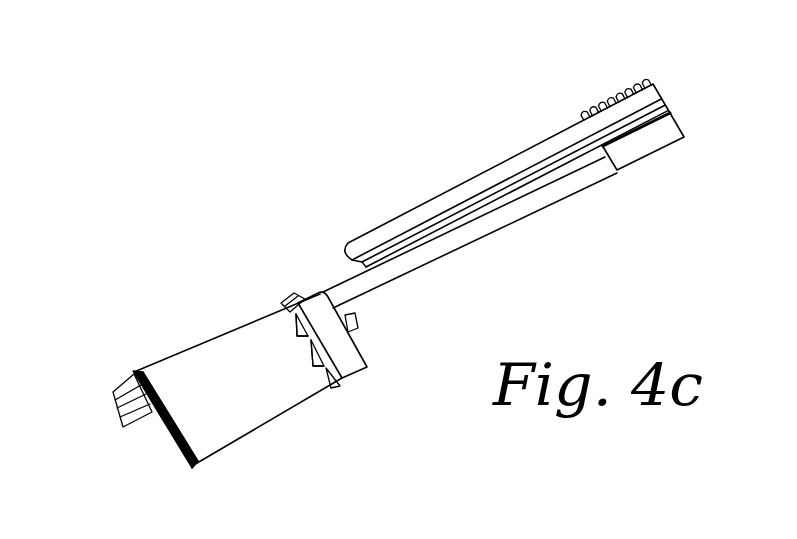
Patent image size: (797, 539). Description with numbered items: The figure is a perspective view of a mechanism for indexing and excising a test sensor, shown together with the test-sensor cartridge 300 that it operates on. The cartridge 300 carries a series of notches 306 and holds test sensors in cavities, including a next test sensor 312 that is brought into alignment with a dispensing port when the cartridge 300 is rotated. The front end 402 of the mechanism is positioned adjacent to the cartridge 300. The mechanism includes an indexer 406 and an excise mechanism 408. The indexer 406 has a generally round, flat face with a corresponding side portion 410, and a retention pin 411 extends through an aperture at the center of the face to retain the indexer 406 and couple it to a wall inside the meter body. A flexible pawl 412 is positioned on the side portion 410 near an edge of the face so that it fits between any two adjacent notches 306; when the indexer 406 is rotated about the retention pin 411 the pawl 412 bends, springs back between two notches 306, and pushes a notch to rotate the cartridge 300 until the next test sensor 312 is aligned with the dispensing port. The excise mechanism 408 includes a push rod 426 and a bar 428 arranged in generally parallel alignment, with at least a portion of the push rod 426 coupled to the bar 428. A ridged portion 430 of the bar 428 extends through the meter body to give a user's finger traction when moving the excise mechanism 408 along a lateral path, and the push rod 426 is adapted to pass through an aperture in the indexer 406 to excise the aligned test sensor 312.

The test-sensor cartridge 300 is at (258, 447).
The front end 402 is at (155, 443).
The next test sensor 312 is at (118, 401).
The side portion 410 is at (353, 355).
The flexible pawl 412 is at (292, 298).
The retention pin 411 is at (360, 321).
The notches 306 is at (332, 390).
The indexer 406 is at (357, 383).
The push rod 426 is at (487, 222).
The excise mechanism 408 is at (358, 226).
The bar 428 is at (668, 94).
The ridged portion 430 is at (626, 87).